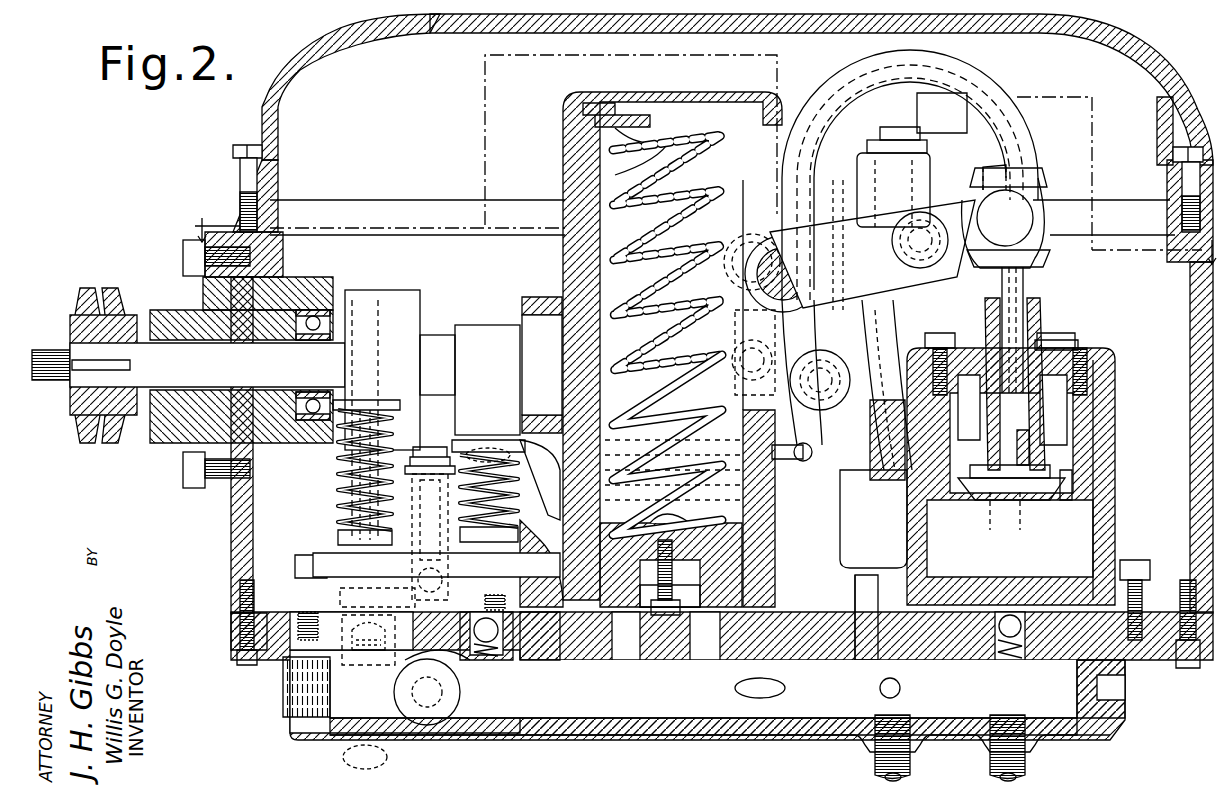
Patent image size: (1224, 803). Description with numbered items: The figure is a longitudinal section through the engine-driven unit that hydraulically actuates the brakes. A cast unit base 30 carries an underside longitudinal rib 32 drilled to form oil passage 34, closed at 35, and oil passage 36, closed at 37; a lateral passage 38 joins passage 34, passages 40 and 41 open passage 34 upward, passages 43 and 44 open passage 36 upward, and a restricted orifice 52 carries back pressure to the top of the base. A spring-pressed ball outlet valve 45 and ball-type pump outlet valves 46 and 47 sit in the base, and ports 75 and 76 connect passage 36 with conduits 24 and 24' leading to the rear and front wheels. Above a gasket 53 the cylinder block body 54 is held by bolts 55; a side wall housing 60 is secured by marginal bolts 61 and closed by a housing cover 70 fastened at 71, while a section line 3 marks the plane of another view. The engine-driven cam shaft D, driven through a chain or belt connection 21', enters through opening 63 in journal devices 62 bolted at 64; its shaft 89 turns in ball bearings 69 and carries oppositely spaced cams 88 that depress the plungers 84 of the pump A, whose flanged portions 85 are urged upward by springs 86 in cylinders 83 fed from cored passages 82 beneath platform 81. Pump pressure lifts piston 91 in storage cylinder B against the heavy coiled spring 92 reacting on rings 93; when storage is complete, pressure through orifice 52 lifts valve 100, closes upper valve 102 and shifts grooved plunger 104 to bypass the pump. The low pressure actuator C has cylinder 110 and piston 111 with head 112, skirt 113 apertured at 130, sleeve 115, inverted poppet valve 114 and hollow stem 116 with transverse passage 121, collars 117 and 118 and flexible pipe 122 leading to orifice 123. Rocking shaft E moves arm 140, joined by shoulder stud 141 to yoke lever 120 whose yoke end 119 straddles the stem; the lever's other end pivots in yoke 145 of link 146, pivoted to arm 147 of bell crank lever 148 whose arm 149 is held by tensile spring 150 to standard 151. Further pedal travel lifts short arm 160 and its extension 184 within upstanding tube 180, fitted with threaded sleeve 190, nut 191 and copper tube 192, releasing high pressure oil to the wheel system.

The housing cover 70 is at (306, 60).
The cover attachment 71 is at (248, 170).
The section line 3 is at (1205, 250).
The opening 63 is at (278, 260).
The bolts 64 is at (183, 260).
The side wall housing 60 is at (236, 538).
The journal devices 62 is at (278, 292).
The belt connection 21' is at (84, 351).
The engine-driven cam shaft D is at (150, 350).
The cams 88 is at (355, 340).
The engine-driven shaft 89 is at (432, 340).
The ball bearings 69 is at (395, 296).
The storage cylinder B is at (572, 195).
The rings 93 is at (640, 130).
The coiled spring 92 is at (628, 375).
The cylinder block body 54 is at (780, 560).
The piston 91 is at (680, 580).
The brake pedal rock shaft E is at (772, 262).
The yoke 145 is at (722, 262).
The link 146 is at (735, 322).
The arm 147 is at (790, 360).
The arm 140 is at (872, 254).
The shoulder stud 141 is at (928, 265).
The yoke lever 120 is at (830, 240).
The short arm 160 is at (885, 360).
The lateral extension 184 is at (885, 455).
The flexible pipe 122 is at (985, 78).
The bell crank lever 148 is at (817, 451).
The arm 149 is at (795, 442).
The upstanding tube 180 is at (893, 190).
The threaded sleeve 190 is at (920, 130).
The nut 191 is at (928, 147).
The copper tube 192 is at (1040, 162).
The yoke end 119 is at (1000, 212).
The collar 118 is at (1048, 190).
The collar 117 is at (1045, 262).
The hollow valve stem 116 is at (1000, 286).
The low pressure actuator C is at (1022, 375).
The cylinder 110 is at (1100, 428).
The piston 111 is at (1095, 446).
The apertures 130 is at (980, 348).
The skirt 113 is at (1060, 345).
The sleeve 115 is at (1030, 440).
The inverted poppet valve 114 is at (1000, 500).
The transverse passage 121 is at (1022, 500).
The head 112 is at (1066, 498).
The orifice 123 is at (880, 597).
The unit base 30 is at (548, 700).
The oil passage 40 is at (628, 660).
The oil passage 41 is at (708, 660).
The passage 43 is at (870, 670).
The outlet valve 45 is at (1012, 622).
The longitudinal rib 32 is at (703, 705).
The oil passage 34 is at (718, 690).
The oil passage 38 is at (760, 695).
The passage 44 is at (900, 690).
The closure 37 is at (1125, 708).
The oil passage 36 is at (1080, 720).
The port 76 is at (890, 720).
The port 75 is at (1005, 720).
The conduit 24' is at (864, 767).
The conduit 24 is at (1026, 767).
The bolts 55 is at (312, 560).
The marginal bolts 61 is at (247, 668).
The platform 81 is at (340, 560).
The grooved plunger 104 is at (410, 592).
The cored out passages 82 is at (530, 690).
The pump outlet valve 46 is at (372, 665).
The closure 35 is at (284, 714).
The valve 100 is at (400, 660).
The restricted orifice 52 is at (460, 680).
The pump outlet valve 47 is at (512, 660).
The gasket 53 is at (570, 640).
The pump cylinders 83 is at (340, 476).
The springs 86 is at (340, 452).
The plunger 84 is at (366, 400).
The flanged portions 85 is at (400, 404).
The fixed standard 151 is at (490, 448).
The pump A is at (430, 507).
The upper valve 102 is at (340, 512).
The tensile spring 150 is at (552, 480).